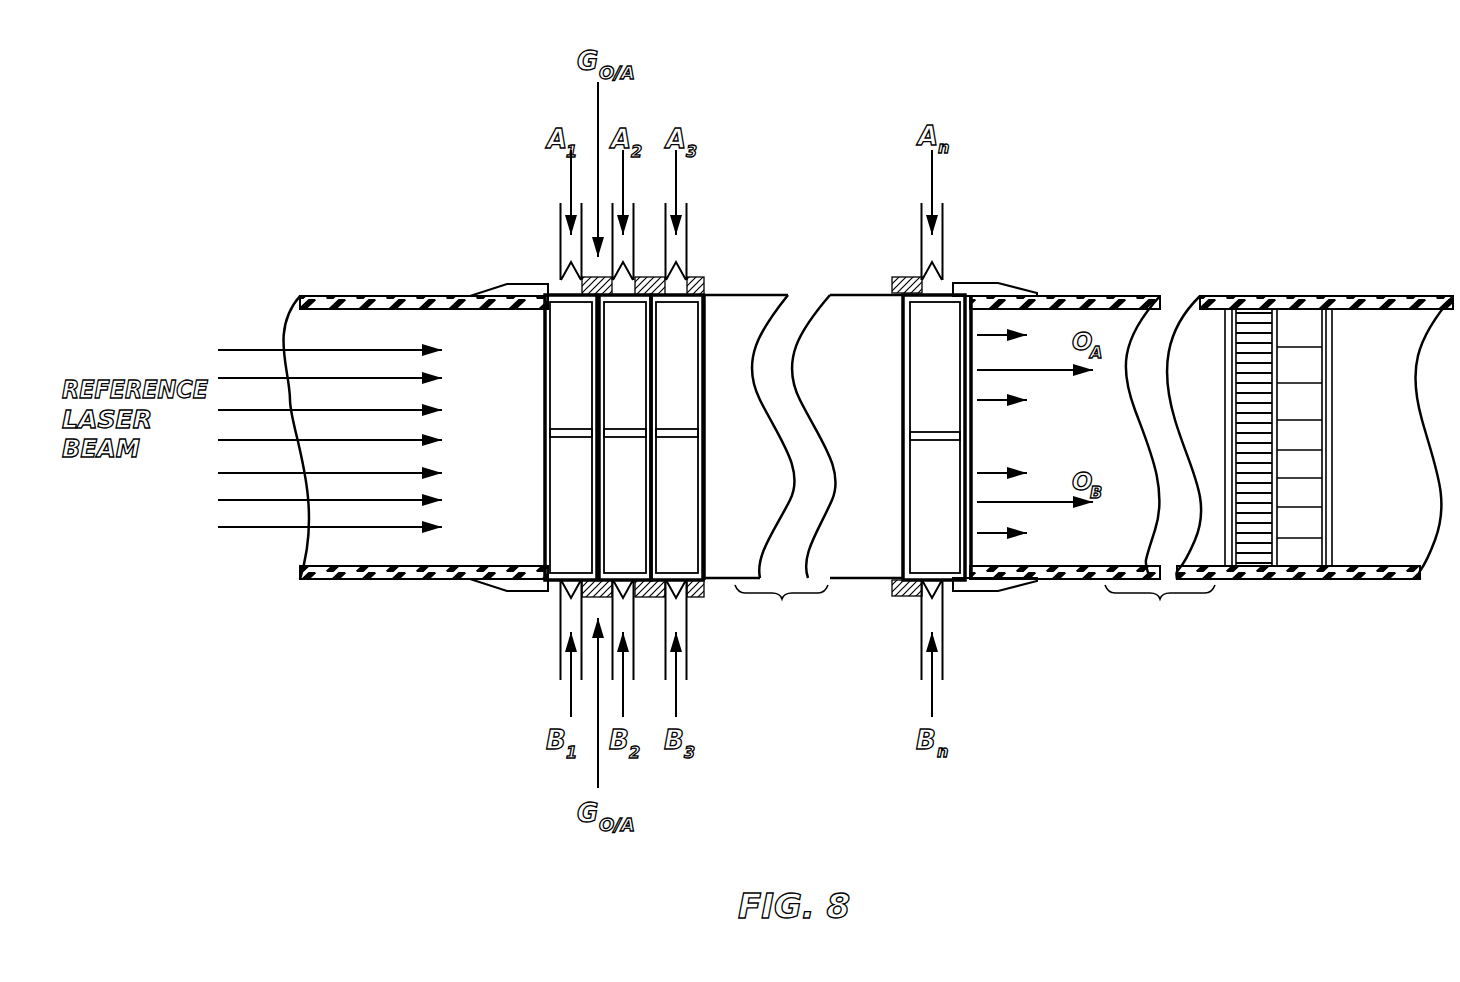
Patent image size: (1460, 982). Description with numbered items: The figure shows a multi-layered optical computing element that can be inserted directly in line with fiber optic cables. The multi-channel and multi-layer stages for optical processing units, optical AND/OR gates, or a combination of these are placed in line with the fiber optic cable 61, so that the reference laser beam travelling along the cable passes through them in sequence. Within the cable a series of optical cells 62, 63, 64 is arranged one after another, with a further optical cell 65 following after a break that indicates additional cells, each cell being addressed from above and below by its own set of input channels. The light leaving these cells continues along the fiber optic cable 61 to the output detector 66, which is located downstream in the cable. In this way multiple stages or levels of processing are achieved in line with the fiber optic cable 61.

The fiber optic cable 61 is at (356, 296).
The optical cell 62 is at (565, 472).
The optical cell 63 is at (622, 342).
The optical cell 64 is at (683, 352).
The optical cell 65 is at (926, 512).
The output detector 66 is at (1310, 403).